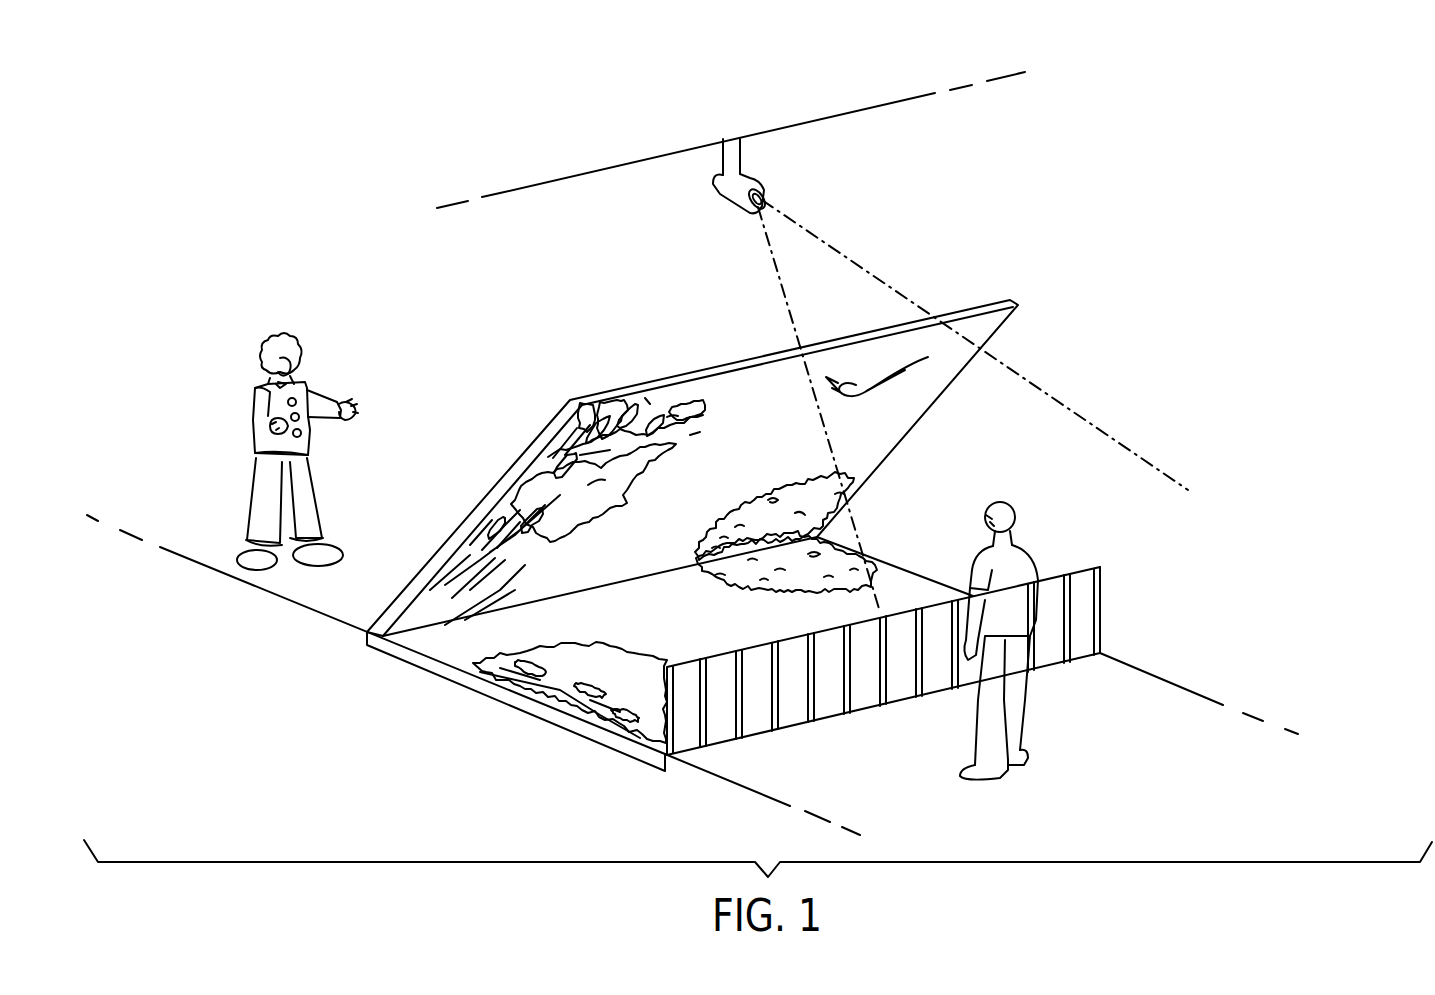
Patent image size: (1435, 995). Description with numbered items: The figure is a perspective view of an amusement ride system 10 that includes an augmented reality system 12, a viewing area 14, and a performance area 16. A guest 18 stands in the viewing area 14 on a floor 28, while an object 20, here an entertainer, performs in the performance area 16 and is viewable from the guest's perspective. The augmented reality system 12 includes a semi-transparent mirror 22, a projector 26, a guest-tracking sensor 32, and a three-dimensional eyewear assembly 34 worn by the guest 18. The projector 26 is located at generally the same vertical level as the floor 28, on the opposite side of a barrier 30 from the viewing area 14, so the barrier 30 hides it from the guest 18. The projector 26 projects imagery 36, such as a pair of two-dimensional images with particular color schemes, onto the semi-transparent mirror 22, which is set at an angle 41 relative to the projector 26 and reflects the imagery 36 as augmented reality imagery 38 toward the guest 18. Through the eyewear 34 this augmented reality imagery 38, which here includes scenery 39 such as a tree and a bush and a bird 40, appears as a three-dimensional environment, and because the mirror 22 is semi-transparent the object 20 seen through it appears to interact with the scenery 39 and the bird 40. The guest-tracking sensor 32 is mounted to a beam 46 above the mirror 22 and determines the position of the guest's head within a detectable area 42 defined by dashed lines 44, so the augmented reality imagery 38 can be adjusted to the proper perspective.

The amusement ride system 10 is at (1192, 96).
The augmented reality system 12 is at (1026, 246).
The viewing area 14 is at (772, 819).
The performance area 16 is at (236, 592).
The guest 18 is at (1032, 543).
The object 20 is at (318, 437).
The semi-transparent mirror 22 is at (955, 378).
The projector 26 is at (520, 718).
The floor 28 is at (870, 766).
The barrier 30 is at (1092, 565).
The guest-tracking sensor 32 is at (762, 176).
The three-dimensional (3D) eyewear assembly 34 is at (985, 522).
The imagery 36 is at (659, 627).
The augmented reality imagery 38 is at (672, 533).
The scenery 39 is at (776, 481).
The bird 40 is at (893, 398).
The angle 41 is at (895, 457).
The detectable area 42 is at (1072, 386).
The dashed lines 44 is at (771, 252).
The beam 46 is at (808, 121).